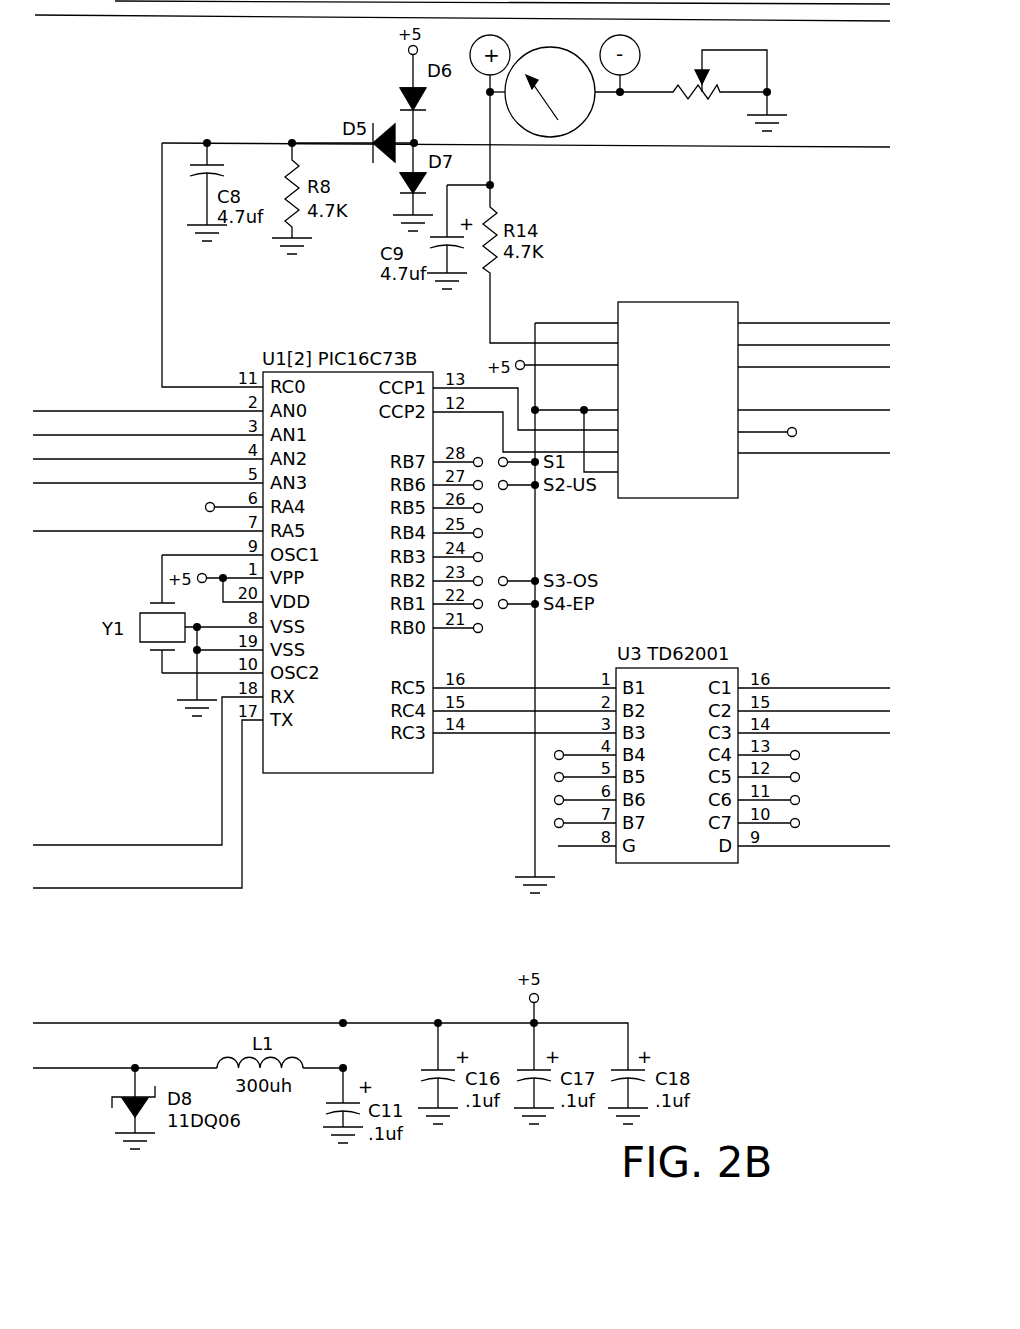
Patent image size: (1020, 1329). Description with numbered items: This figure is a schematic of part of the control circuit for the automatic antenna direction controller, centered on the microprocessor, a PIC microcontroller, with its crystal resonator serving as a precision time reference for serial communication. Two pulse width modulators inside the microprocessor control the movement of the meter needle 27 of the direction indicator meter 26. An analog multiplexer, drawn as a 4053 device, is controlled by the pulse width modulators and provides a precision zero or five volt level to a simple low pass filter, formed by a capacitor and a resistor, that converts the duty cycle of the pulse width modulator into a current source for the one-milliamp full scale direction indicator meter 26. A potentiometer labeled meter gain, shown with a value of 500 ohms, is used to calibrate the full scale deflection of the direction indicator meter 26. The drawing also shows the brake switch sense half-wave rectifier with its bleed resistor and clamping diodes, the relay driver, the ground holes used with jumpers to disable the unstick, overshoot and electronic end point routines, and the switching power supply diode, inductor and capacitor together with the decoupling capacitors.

The direction indicator meter 26 is at (577, 127).
The meter needle 27 is at (550, 112).
The potentiometer R15 (500 ohm, meter gain) 500 is at (691, 90).
The analog multiplexer U2 4053 is at (682, 387).